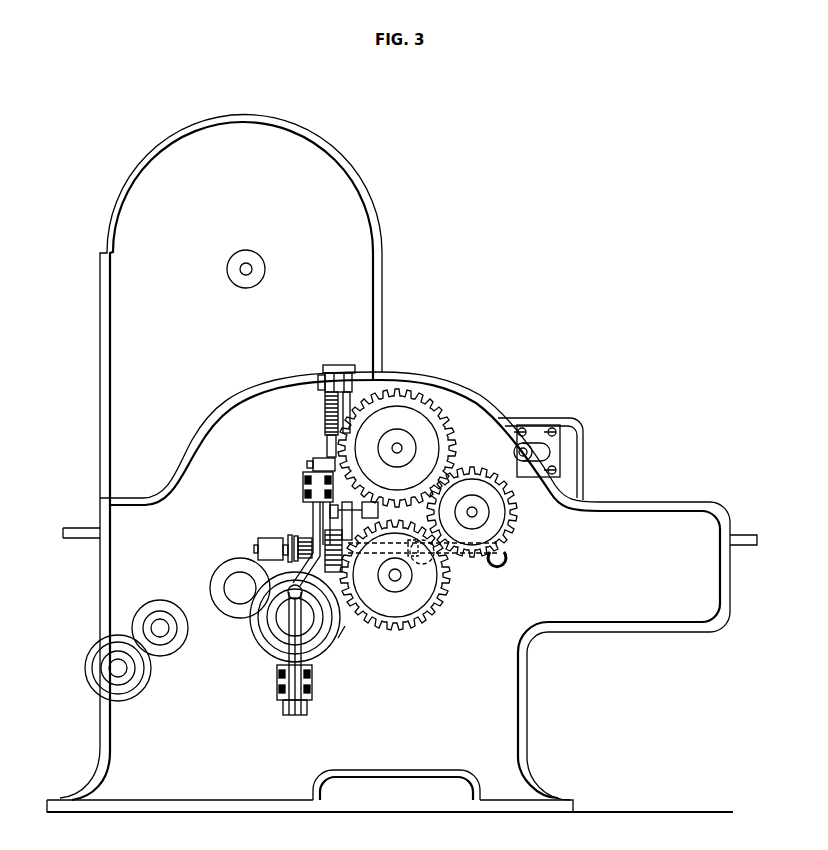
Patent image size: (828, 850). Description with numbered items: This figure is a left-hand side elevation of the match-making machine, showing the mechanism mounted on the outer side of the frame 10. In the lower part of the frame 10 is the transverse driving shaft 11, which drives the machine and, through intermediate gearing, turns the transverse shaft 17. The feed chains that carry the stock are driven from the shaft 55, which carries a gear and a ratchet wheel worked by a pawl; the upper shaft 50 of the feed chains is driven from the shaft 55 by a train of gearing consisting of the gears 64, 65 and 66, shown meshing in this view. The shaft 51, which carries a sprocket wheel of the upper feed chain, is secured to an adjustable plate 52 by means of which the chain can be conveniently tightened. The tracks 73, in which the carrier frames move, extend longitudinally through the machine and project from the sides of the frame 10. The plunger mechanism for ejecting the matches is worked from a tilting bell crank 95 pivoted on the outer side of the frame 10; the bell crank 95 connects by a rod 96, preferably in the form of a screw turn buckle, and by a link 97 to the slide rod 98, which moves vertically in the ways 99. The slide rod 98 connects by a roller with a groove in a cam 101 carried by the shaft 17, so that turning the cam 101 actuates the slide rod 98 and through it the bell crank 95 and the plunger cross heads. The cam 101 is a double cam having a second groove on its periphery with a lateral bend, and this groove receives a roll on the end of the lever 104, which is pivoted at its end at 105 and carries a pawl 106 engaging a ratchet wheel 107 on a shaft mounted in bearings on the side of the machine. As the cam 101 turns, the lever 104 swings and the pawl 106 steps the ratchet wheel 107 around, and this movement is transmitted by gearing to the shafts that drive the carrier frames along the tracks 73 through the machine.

The frame 10 is at (357, 318).
The driving shaft 11 is at (118, 668).
The shaft 17 is at (283, 618).
The upper shaft 50 is at (400, 448).
The shaft 51 is at (525, 450).
The adjustable plate 52 is at (555, 443).
The shaft 55 is at (400, 578).
The gear 64 is at (390, 610).
The gear 65 is at (472, 462).
The gear 66 is at (405, 400).
The tracks 73 is at (76, 530).
The tilting bell crank 95 is at (336, 372).
The rod 96 is at (322, 410).
The link 97 is at (315, 465).
The slide rod 98 is at (313, 525).
The ways 99 is at (302, 488).
The cam 101 is at (322, 652).
The lever 104 is at (343, 612).
The pivot 105 is at (357, 500).
The pawl 106 is at (338, 638).
The ratchet wheel 107 is at (330, 548).